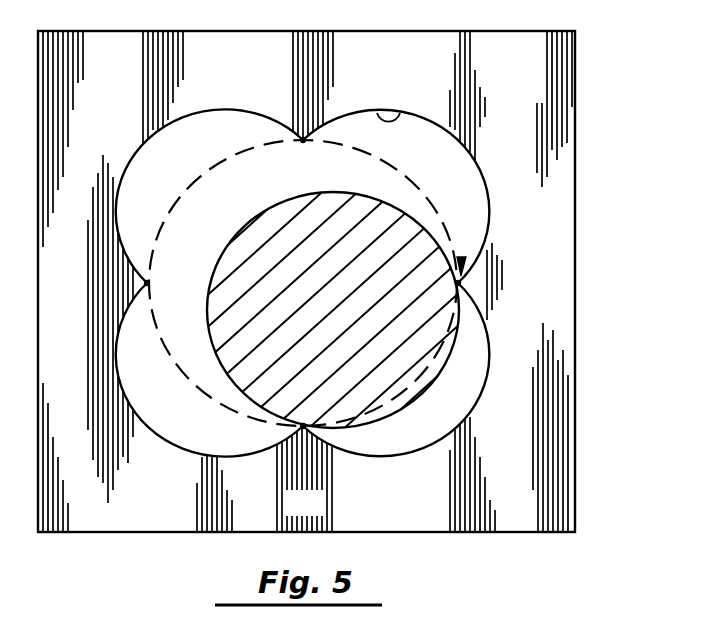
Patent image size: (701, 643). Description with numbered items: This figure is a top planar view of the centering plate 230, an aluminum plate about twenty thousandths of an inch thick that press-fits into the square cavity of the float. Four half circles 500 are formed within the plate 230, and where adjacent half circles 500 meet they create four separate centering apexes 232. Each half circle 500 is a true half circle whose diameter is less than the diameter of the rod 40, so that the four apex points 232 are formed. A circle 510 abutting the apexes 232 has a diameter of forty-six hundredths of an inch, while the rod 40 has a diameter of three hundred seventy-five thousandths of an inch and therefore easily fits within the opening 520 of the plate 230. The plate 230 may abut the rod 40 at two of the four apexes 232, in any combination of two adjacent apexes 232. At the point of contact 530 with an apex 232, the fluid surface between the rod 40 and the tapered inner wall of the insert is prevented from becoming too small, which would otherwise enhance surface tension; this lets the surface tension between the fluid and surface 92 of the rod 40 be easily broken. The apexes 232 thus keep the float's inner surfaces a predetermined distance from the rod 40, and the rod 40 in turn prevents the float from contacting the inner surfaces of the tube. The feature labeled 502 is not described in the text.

The rod 40 is at (347, 313).
The surface 92 is at (377, 197).
The centering plate 230 is at (528, 260).
The centering apexes 232 is at (301, 141).
The half circles 500 is at (173, 410).
The upper-right lobe 502 is at (380, 112).
The circle 510 is at (197, 179).
The opening 520 is at (280, 190).
The point of contact 530 is at (463, 262).